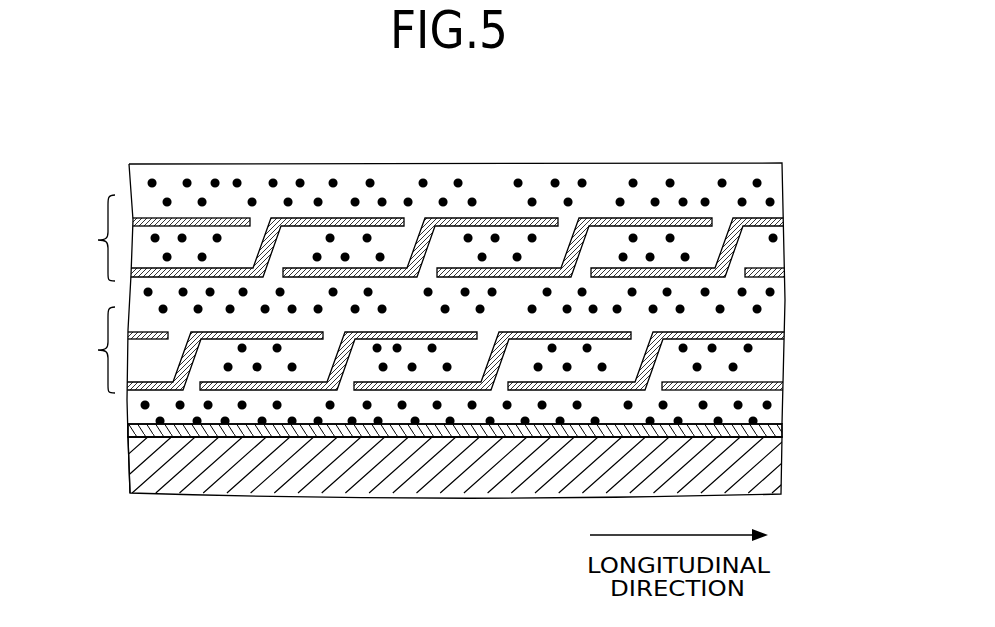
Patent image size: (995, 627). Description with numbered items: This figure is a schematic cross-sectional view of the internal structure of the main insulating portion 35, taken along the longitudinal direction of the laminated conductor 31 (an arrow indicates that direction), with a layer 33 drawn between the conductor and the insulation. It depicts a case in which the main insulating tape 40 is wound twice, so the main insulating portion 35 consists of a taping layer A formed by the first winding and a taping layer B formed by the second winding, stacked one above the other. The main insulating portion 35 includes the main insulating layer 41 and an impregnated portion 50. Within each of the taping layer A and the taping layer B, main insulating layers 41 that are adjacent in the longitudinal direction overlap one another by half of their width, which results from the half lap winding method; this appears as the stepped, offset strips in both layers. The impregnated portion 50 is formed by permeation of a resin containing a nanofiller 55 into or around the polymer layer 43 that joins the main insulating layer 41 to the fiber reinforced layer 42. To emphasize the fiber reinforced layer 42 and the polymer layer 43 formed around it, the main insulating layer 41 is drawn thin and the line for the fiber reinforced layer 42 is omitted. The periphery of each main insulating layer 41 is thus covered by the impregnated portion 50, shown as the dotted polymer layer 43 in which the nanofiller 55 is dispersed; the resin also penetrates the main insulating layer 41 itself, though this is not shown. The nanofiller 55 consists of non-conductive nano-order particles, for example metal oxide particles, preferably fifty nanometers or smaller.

The laminated conductor 31 is at (456, 480).
The adhesive layer 33 is at (768, 423).
The main insulating portion 35 is at (228, 150).
The main insulating tape 40 is at (114, 178).
The main insulating layer 41 is at (768, 264).
The fiber reinforced layer 42 is at (733, 183).
The polymer layer 43 is at (760, 238).
The impregnated portion 50 is at (797, 273).
The nanofiller 55 is at (735, 366).
The taping layer A is at (96, 350).
The taping layer B is at (95, 238).